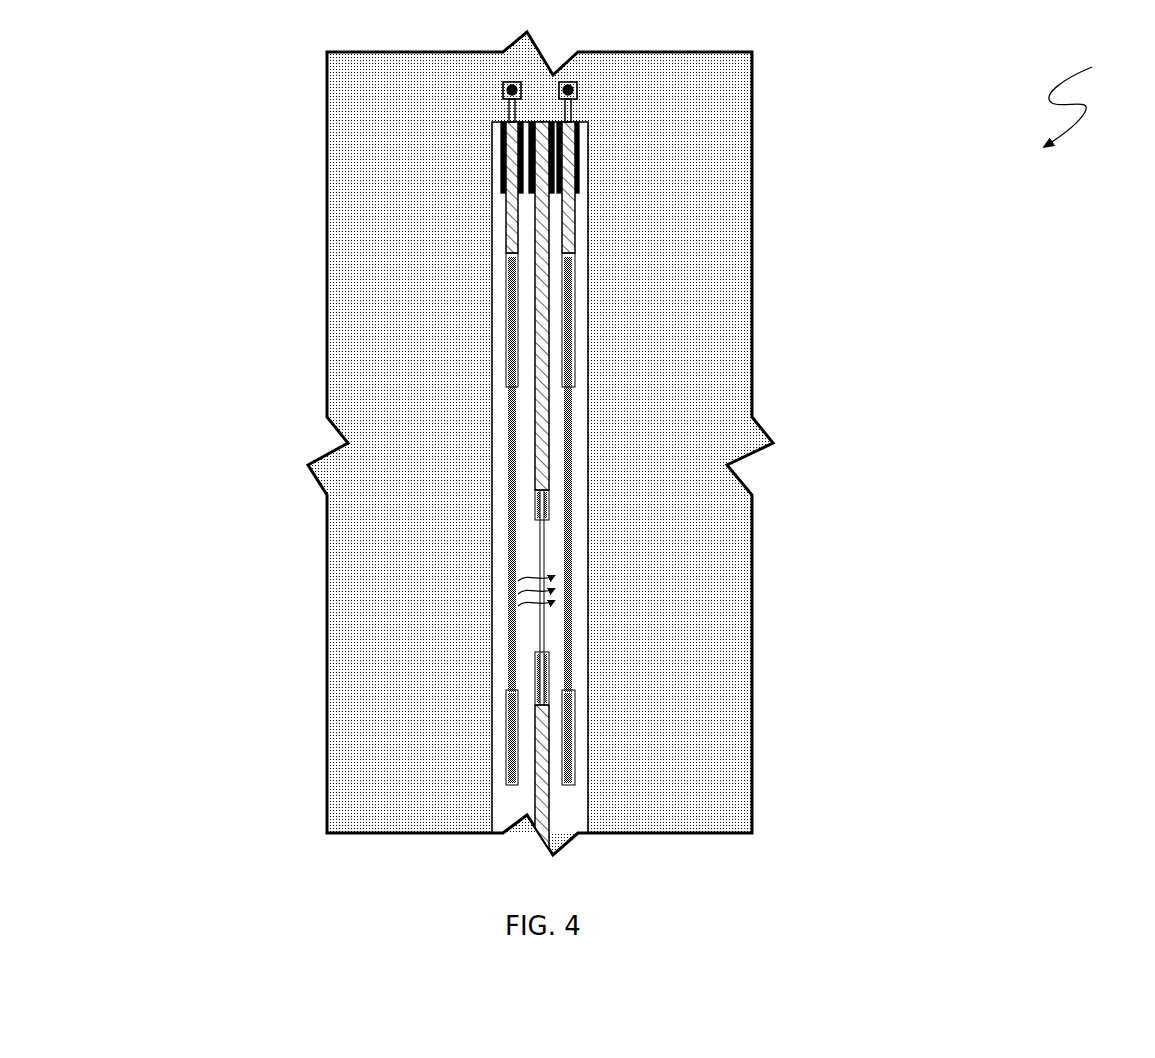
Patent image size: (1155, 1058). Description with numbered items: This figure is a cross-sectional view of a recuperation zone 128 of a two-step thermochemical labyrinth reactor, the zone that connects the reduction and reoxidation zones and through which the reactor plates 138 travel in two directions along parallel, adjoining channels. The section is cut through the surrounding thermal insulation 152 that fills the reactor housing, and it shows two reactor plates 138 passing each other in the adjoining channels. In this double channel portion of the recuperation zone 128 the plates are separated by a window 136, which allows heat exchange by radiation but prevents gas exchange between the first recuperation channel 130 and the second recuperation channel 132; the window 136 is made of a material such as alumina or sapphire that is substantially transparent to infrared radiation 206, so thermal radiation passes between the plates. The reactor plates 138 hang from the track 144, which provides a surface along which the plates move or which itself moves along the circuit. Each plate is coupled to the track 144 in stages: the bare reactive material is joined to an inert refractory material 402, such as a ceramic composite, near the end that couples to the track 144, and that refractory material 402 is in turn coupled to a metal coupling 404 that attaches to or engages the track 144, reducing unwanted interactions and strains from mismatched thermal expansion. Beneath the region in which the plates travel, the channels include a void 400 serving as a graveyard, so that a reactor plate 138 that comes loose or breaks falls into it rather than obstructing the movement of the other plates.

The recuperation zone 128 is at (1085, 98).
The first recuperation channel 130 is at (500, 410).
The second recuperation channel 132 is at (578, 460).
The window 136 is at (540, 635).
The reactor plate 138 is at (568, 425).
The track 144 is at (505, 99).
The thermal insulation 152 is at (710, 240).
The infrared radiation 206 is at (537, 580).
The void 400 is at (507, 805).
The inert refractory material 402 is at (505, 215).
The metal coupling 404 is at (570, 165).